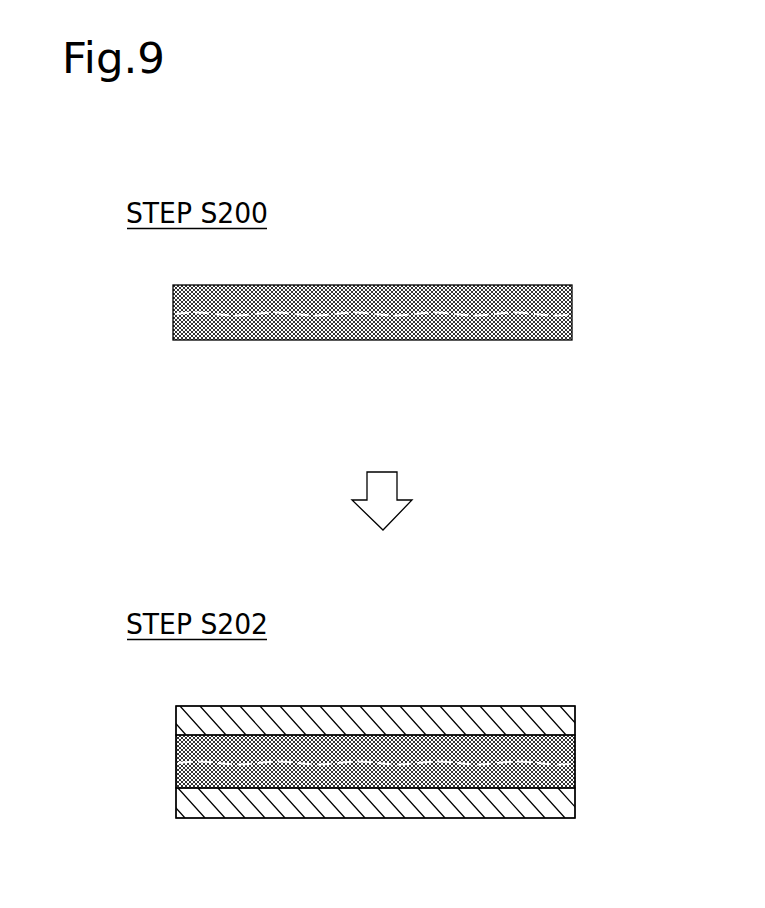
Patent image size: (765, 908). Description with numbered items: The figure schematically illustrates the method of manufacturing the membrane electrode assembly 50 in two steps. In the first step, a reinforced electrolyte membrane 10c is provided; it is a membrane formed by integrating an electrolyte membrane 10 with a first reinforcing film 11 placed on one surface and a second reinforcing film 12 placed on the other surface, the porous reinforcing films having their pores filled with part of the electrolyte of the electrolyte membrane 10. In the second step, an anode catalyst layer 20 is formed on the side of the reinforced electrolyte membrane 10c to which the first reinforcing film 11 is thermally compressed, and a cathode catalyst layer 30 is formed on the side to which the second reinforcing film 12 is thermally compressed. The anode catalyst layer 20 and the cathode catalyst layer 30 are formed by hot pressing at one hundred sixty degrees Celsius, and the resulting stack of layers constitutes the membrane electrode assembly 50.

The electrolyte membrane 10 is at (573, 307).
The first reinforcing film 11 is at (573, 326).
The second reinforcing film 12 is at (573, 288).
The reinforced electrolyte membrane 10c is at (625, 274).
The anode catalyst layer 20 is at (575, 816).
The cathode catalyst layer 30 is at (575, 707).
The membrane electrode assembly 50 is at (572, 682).